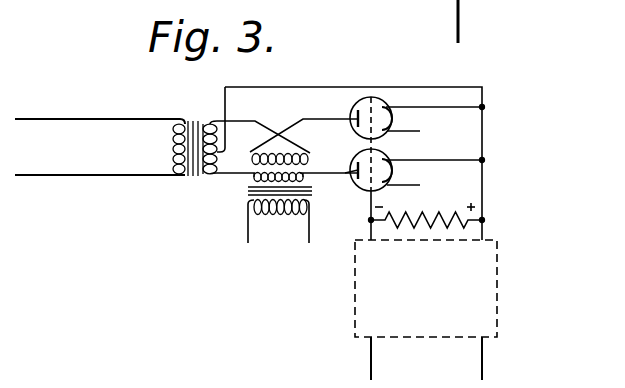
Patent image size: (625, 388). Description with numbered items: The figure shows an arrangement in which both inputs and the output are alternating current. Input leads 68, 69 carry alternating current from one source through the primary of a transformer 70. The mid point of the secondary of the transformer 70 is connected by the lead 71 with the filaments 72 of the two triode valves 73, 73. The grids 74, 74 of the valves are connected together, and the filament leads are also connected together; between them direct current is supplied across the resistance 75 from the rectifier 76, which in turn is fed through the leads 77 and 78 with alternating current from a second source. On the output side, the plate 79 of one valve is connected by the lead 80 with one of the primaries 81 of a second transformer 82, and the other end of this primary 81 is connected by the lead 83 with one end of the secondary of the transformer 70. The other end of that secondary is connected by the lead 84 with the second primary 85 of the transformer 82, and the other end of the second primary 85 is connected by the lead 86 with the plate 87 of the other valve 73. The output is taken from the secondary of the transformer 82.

The input lead 68 is at (102, 175).
The input lead 69 is at (101, 118).
The transformer 70 is at (197, 120).
The lead 71 is at (222, 152).
The filament 72 is at (437, 160).
The triode valve 73 is at (362, 138).
The grid 74 is at (378, 98).
The resistance 75 is at (433, 216).
The rectifier 76 is at (426, 288).
The lead 77 is at (369, 360).
The lead 78 is at (484, 352).
The plate 79 is at (351, 104).
The lead 80 is at (322, 120).
The primary 81 is at (289, 156).
The transformer 82 is at (250, 190).
The lead 83 is at (239, 121).
The lead 84 is at (236, 176).
The second primary 85 is at (277, 215).
The lead 86 is at (343, 174).
The plate 87 is at (352, 166).